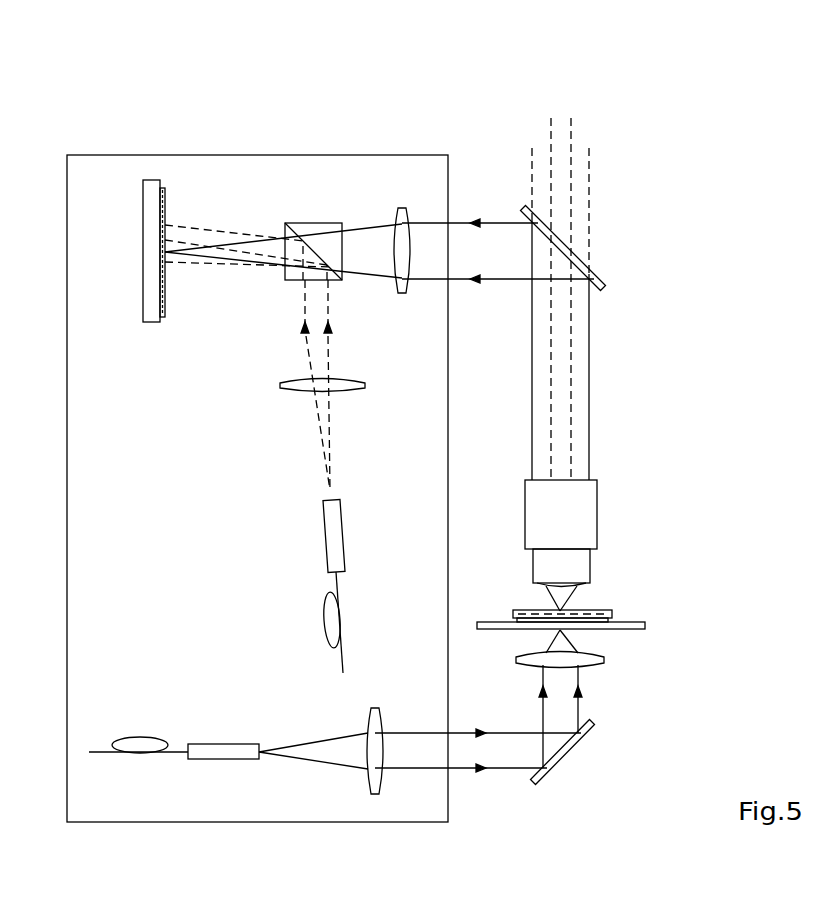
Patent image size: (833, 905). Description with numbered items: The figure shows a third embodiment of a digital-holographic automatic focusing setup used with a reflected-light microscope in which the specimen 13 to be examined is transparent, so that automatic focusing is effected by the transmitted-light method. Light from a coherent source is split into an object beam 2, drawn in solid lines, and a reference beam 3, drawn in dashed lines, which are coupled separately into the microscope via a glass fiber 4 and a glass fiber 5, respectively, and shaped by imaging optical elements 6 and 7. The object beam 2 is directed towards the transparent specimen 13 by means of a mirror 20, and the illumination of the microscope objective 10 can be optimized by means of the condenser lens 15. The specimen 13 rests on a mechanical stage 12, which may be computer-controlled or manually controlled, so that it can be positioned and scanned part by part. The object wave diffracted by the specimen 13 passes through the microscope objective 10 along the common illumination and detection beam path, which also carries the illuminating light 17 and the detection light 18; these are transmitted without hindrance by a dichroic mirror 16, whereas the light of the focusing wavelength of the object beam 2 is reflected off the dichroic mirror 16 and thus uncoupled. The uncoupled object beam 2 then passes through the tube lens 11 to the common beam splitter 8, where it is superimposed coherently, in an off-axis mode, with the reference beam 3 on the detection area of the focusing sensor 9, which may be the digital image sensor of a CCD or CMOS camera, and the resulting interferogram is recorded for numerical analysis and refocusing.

The object beam 2 is at (312, 740).
The reference beam 3 is at (323, 455).
The glass fiber 4 is at (217, 744).
The glass fiber 5 is at (325, 550).
The imaging optical element 6 is at (378, 710).
The imaging optical element 7 is at (280, 386).
The beam splitter 8 is at (327, 223).
The focusing sensor 9 is at (154, 323).
The microscope objective 10 is at (597, 507).
The tube lens 11 is at (400, 208).
The mechanical stage 12 is at (637, 629).
The transparent specimen 13 is at (603, 610).
The condenser lens 15 is at (593, 670).
The dichroic mirror 16 is at (605, 280).
The illuminating light 17 is at (572, 118).
The detection light 18 is at (531, 148).
The mirror 20 is at (557, 768).